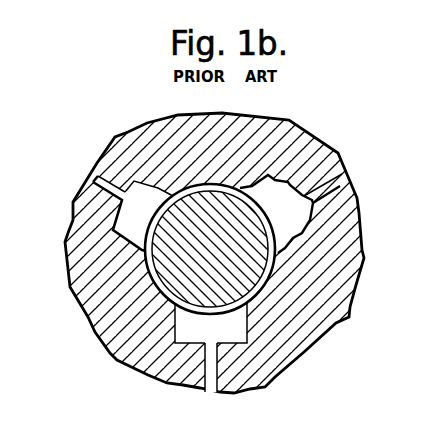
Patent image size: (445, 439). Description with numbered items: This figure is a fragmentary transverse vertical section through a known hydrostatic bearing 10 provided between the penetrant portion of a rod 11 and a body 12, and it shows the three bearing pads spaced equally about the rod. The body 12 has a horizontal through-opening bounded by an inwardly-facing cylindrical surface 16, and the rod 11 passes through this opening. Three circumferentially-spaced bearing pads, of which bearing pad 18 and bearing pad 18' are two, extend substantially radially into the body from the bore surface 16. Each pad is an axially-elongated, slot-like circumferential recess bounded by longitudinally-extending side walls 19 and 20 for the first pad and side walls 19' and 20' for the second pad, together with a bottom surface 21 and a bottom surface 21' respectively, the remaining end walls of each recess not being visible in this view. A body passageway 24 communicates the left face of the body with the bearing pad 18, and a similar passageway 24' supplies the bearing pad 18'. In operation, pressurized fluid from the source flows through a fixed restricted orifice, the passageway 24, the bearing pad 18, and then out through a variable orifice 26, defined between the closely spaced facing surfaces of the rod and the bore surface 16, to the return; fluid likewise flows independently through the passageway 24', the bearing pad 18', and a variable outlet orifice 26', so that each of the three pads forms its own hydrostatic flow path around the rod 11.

The hydrostatic bearing 10 is at (360, 123).
The rod 11 is at (281, 290).
The body 12 is at (372, 212).
The inwardly-facing cylindrical surface 16 is at (206, 192).
The bearing pad 18 is at (211, 343).
The bearing pad 18' is at (151, 213).
The side wall 19 is at (122, 324).
The side wall 19' is at (186, 154).
The side wall 20 is at (297, 334).
The side wall 20' is at (107, 259).
The bottom surface 21 is at (246, 368).
The bottom surface 21' is at (123, 156).
The body passageway 24 is at (221, 387).
The body passageway 24' is at (76, 177).
The variable orifice 26 is at (214, 281).
The variable outlet orifice 26' is at (169, 241).